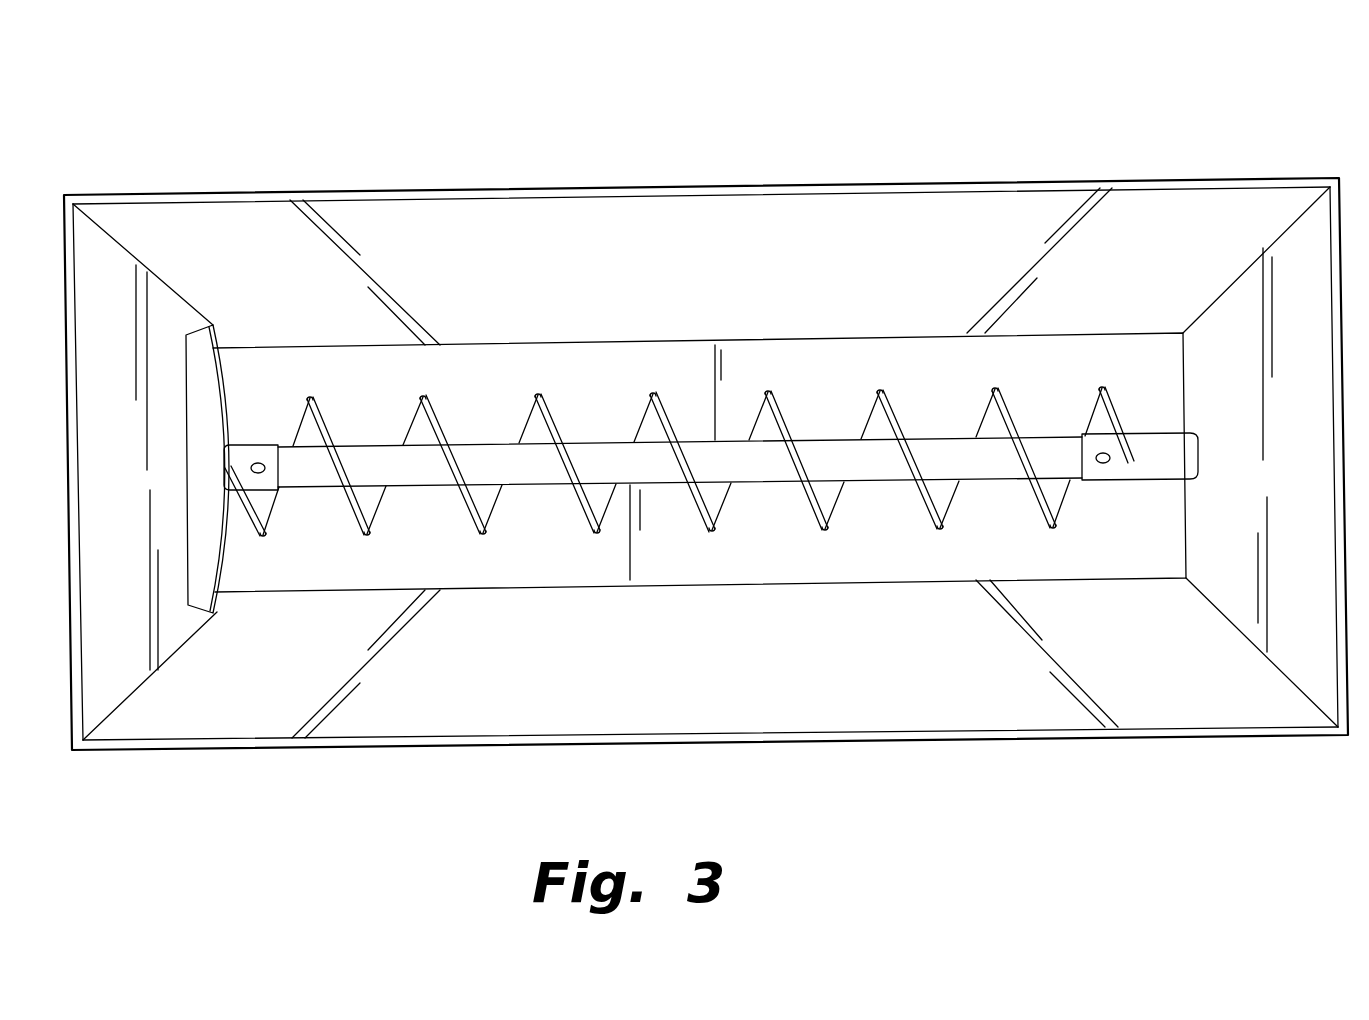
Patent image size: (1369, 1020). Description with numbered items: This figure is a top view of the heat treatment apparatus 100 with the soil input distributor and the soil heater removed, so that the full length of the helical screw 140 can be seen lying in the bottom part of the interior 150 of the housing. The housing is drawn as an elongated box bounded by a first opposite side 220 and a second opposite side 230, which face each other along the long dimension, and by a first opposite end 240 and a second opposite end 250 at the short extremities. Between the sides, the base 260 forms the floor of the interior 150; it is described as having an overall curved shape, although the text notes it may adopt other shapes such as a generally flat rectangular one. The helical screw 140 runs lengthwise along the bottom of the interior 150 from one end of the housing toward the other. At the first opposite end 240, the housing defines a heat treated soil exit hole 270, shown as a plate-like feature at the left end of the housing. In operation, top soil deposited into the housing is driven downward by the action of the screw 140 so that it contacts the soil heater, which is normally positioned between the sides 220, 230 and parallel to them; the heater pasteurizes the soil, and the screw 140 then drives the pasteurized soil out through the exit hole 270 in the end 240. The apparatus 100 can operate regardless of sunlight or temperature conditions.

The heat treatment apparatus 100 is at (743, 158).
The helical screw 140 is at (487, 453).
The interior 150 is at (785, 680).
The first opposite side 220 is at (1052, 738).
The second opposite side 230 is at (1043, 182).
The first opposite end 240 is at (62, 237).
The second opposite end 250 is at (1343, 218).
The curved base 260 is at (790, 560).
The heat treated soil exit hole 270 is at (203, 350).